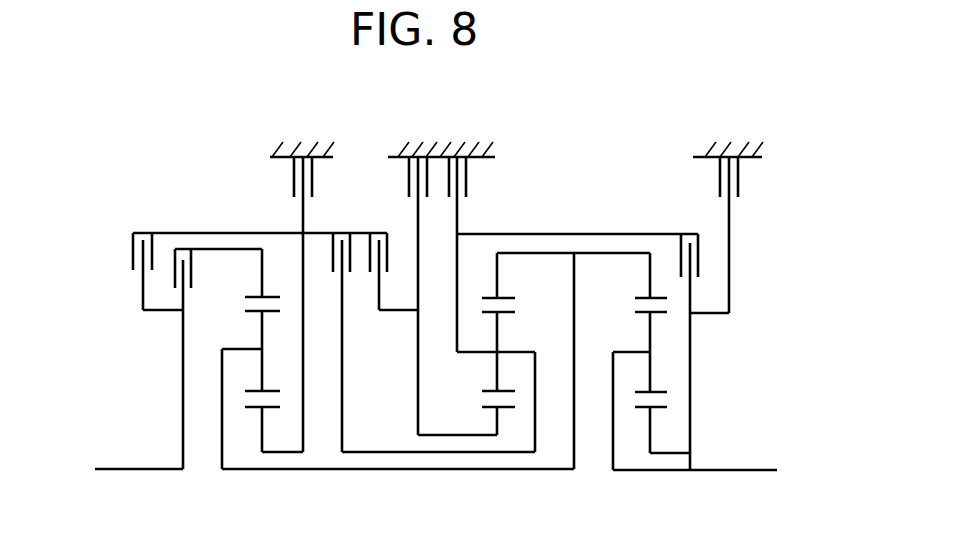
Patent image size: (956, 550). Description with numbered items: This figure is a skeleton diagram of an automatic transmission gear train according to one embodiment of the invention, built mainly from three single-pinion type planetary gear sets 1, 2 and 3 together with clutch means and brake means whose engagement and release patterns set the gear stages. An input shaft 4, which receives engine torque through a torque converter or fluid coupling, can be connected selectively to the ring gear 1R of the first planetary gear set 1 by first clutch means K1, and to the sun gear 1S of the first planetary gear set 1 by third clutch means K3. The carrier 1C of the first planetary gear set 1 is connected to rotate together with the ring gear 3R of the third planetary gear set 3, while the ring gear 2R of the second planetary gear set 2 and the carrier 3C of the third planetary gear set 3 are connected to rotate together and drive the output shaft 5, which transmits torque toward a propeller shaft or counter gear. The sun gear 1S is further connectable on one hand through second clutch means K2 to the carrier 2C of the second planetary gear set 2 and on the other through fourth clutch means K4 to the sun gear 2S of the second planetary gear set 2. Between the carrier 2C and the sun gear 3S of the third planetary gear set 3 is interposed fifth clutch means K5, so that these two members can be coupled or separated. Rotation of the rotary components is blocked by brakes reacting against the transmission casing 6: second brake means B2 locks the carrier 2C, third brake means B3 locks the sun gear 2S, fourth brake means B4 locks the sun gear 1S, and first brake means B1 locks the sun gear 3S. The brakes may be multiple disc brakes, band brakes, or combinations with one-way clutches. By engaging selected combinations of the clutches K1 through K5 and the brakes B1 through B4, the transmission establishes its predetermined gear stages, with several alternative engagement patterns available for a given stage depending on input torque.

The first planetary gear set 1 is at (386, 383).
The second planetary gear set 2 is at (494, 394).
The third planetary gear set 3 is at (632, 385).
The input shaft 4 is at (140, 469).
The output shaft 5 is at (742, 470).
The transmission casing 6 is at (283, 151).
The ring gear of first planetary gear set 1R is at (266, 297).
The carrier of first planetary gear set 1C is at (245, 349).
The sun gear of first planetary gear set 1S is at (268, 408).
The ring gear of second planetary gear set 2R is at (505, 298).
The carrier of second planetary gear set 2C is at (515, 352).
The sun gear of second planetary gear set 2S is at (490, 408).
The ring gear of third planetary gear set 3R is at (640, 298).
The carrier of third planetary gear set 3C is at (630, 352).
The sun gear of third planetary gear set 3S is at (662, 422).
The first clutch means K1 is at (218, 359).
The second clutch means K2 is at (430, 329).
The third clutch means K3 is at (259, 256).
The fourth clutch means K4 is at (394, 258).
The fifth clutch means K5 is at (579, 338).
The first brake means B1 is at (716, 213).
The second brake means B2 is at (466, 231).
The third brake means B3 is at (447, 273).
The fourth brake means B4 is at (288, 282).